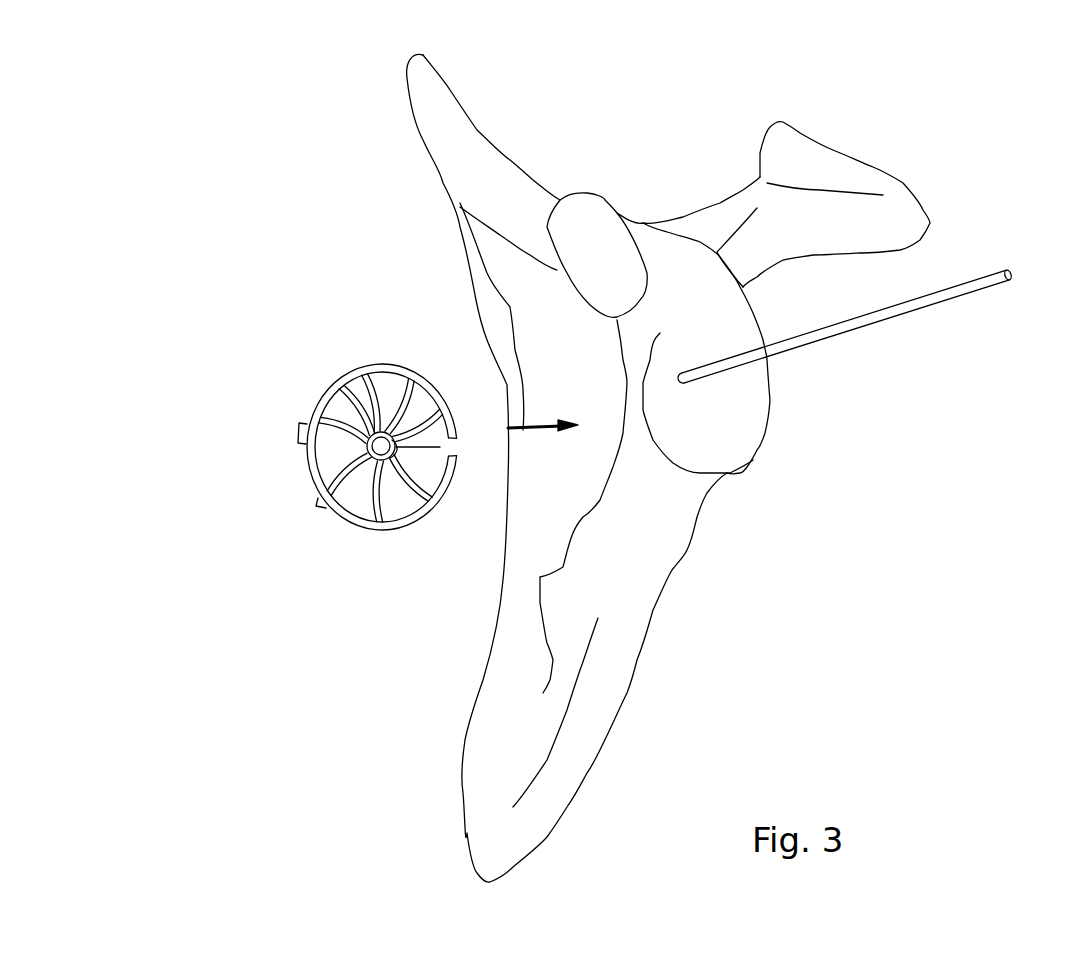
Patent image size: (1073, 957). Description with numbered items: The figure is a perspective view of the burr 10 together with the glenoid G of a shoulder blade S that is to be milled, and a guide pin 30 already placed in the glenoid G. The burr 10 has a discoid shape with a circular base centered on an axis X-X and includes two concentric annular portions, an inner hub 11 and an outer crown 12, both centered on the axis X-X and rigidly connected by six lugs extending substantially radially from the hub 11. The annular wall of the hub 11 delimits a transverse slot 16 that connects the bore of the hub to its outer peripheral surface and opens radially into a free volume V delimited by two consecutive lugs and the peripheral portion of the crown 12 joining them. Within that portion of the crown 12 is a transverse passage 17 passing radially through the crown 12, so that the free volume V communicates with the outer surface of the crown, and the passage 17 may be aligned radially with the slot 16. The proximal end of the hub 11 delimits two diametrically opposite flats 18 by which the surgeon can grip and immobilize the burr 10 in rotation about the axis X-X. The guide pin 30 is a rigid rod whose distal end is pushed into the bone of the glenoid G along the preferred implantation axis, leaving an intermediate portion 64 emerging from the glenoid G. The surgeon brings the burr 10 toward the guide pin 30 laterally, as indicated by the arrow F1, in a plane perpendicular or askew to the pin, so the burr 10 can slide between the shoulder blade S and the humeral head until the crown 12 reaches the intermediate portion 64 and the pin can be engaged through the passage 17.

The burr 10 is at (282, 360).
The inner hub 11 is at (353, 527).
The outer crown 12 is at (370, 363).
The transverse slot 16 is at (413, 493).
The transverse passage 17 is at (482, 416).
The flats 18 is at (313, 400).
The guide pin 30 is at (980, 267).
The intermediate portion 64 is at (788, 343).
The glenoid G is at (747, 423).
The shoulder blade S is at (452, 787).
The free volume V is at (443, 448).
The arrow F1 is at (543, 416).
The axis X-X is at (345, 455).